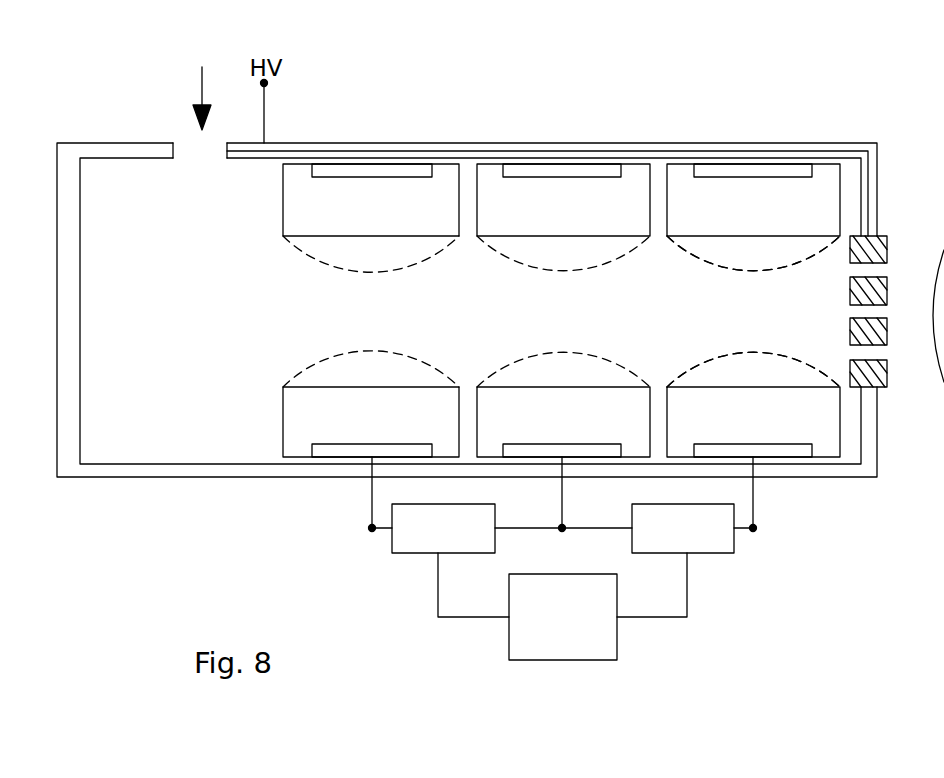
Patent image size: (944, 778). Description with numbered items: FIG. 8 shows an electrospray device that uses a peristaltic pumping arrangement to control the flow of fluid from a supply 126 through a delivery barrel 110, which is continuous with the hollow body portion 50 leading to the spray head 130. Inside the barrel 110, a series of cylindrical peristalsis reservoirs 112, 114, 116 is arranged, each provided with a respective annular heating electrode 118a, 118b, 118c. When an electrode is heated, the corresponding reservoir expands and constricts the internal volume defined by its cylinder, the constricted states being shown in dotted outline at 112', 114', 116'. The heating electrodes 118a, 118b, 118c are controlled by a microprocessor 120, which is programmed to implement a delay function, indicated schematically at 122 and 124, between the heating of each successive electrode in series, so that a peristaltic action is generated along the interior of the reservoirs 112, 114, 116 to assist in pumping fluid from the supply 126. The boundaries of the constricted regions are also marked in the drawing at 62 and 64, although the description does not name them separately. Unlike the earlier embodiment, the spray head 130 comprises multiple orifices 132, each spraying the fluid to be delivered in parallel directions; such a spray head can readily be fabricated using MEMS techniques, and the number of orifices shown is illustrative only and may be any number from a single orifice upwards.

The hollow body portion 50 is at (812, 470).
The lower discharge region 62 is at (790, 353).
The upper discharge region 64 is at (712, 262).
The delivery barrel 110 is at (182, 477).
The peristalsis reservoir 112 is at (371, 187).
The peristalsis reservoir 114 is at (563, 187).
The peristalsis reservoir 116 is at (753, 187).
The constricted peristalsis reservoir 112' is at (371, 394).
The constricted peristalsis reservoir 114' is at (563, 399).
The constricted peristalsis reservoir 116' is at (745, 393).
The annular heating electrode 118a is at (405, 164).
The annular heating electrode 118b is at (563, 164).
The annular heating electrode 118c is at (755, 164).
The microprocessor 120 is at (556, 660).
The delay function 122 is at (408, 553).
The delay function 124 is at (707, 553).
The supply 126 is at (204, 83).
The spray head 130 is at (887, 243).
The orifices 132 is at (852, 270).